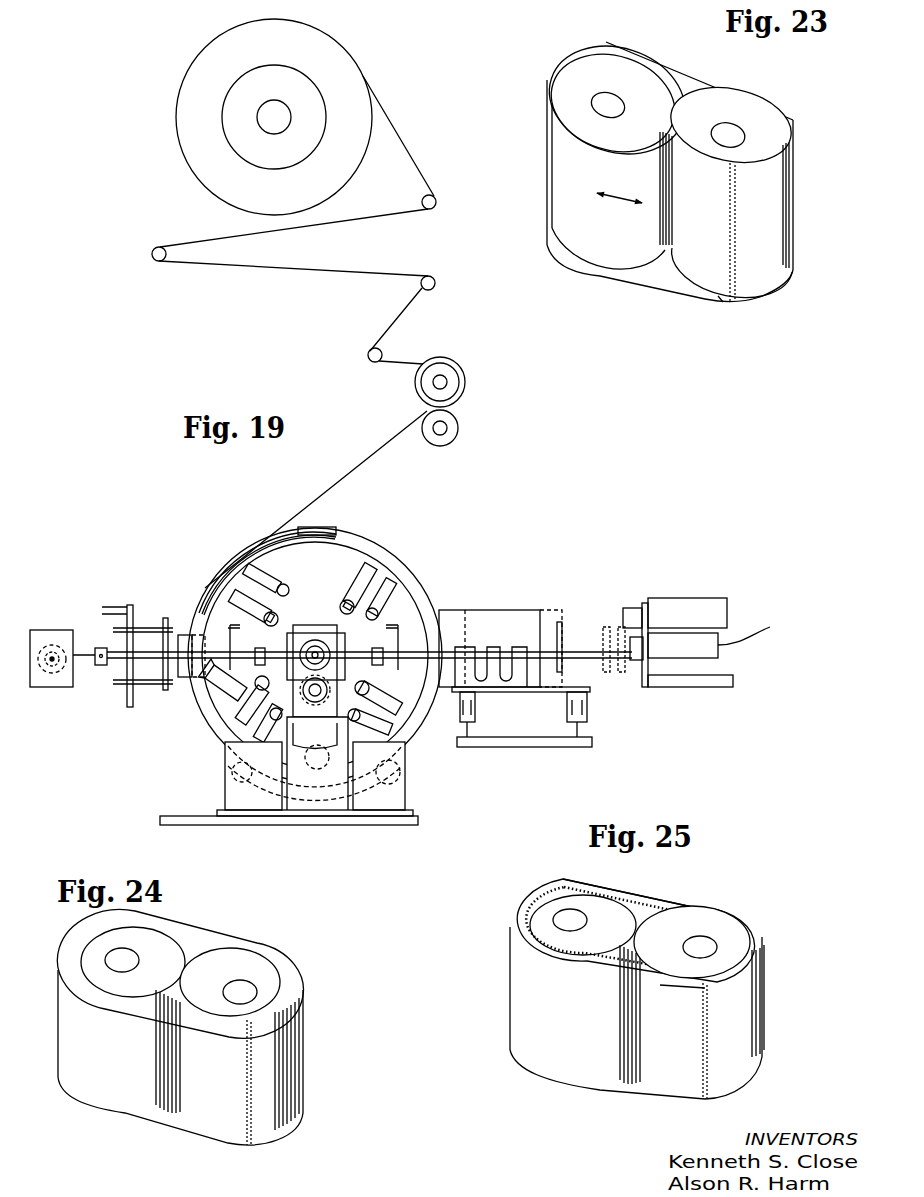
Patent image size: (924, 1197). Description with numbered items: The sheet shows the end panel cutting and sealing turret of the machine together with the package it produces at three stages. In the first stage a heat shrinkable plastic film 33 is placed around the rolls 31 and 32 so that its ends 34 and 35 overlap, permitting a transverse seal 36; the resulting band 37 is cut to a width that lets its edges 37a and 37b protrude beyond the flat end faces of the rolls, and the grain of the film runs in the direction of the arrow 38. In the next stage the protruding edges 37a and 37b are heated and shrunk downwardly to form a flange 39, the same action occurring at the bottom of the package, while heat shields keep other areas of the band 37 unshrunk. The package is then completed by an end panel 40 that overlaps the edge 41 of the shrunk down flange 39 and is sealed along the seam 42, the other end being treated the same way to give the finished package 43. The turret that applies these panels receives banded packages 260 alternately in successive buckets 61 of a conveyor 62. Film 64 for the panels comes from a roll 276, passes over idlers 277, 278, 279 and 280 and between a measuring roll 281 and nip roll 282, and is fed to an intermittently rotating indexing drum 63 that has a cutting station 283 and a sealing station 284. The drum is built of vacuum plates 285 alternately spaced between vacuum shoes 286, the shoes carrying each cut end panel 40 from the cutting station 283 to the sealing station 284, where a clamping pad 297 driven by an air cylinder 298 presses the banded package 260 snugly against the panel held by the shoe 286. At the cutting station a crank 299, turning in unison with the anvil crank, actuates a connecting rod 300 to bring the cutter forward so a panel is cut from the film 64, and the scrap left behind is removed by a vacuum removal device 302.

In FIG. 23, the roll 31 is at (608, 89).
In FIG. 24, the roll 31 is at (166, 973).
In FIG. 25, the roll 31 is at (615, 908).
In FIG. 23, the roll 32 is at (729, 116).
In FIG. 24, the roll 32 is at (214, 983).
In FIG. 25, the roll 32 is at (726, 938).
In FIG. 23, the heat shrinkable plastic film 33 is at (724, 70).
In FIG. 24, the heat shrinkable plastic film 33 is at (212, 928).
In FIG. 25, the heat shrinkable plastic film 33 is at (673, 895).
In FIG. 23, the end of film 34 is at (738, 292).
In FIG. 23, the end of film 35 is at (717, 305).
In FIG. 23, the transverse seal 36 is at (735, 270).
In FIG. 24, the transverse seal 36 is at (250, 1138).
In FIG. 25, the transverse seal 36 is at (713, 1088).
In FIG. 23, the band 37 is at (546, 82).
In FIG. 23, the protruding edge of band 37a is at (635, 55).
In FIG. 23, the protruding edge of band 37b is at (597, 264).
In FIG. 23, the arrow 38 is at (628, 203).
In FIG. 24, the shrunk down flange 39 is at (258, 952).
In FIG. 25, the shrunk down flange 39 is at (722, 906).
In FIG. 25, the end panel 40 is at (712, 975).
In FIG. 24, the edge of shrunk down flange 41 is at (272, 993).
In FIG. 25, the edge of shrunk down flange 41 is at (742, 952).
In FIG. 25, the seam 42 is at (530, 912).
In FIG. 25, the finished package 43 is at (502, 1058).
In FIG. 19, the bucket 61 is at (496, 680).
In FIG. 19, the conveyor 62 is at (590, 707).
In FIG. 19, the indexing drum 63 is at (398, 604).
In FIG. 19, the film 64 is at (393, 110).
In FIG. 19, the banded package 260 is at (478, 614).
In FIG. 19, the roll 276 is at (181, 104).
In FIG. 19, the idler 277 is at (421, 201).
In FIG. 19, the idler 278 is at (166, 254).
In FIG. 19, the idler 279 is at (421, 284).
In FIG. 19, the idler 280 is at (381, 350).
In FIG. 19, the measuring roll 281 is at (416, 384).
In FIG. 19, the nip roll 282 is at (458, 428).
In FIG. 19, the cutting station 283 is at (153, 590).
In FIG. 19, the sealing station 284 is at (440, 732).
In FIG. 19, the vacuum plate 285 is at (213, 586).
In FIG. 19, the vacuum shoe 286 is at (322, 531).
In FIG. 19, the clamping pad 297 is at (552, 622).
In FIG. 19, the air cylinder 298 is at (668, 633).
In FIG. 19, the crank 299 is at (58, 640).
In FIG. 19, the connecting rod 300 is at (88, 665).
In FIG. 19, the vacuum removal device 302 is at (228, 692).